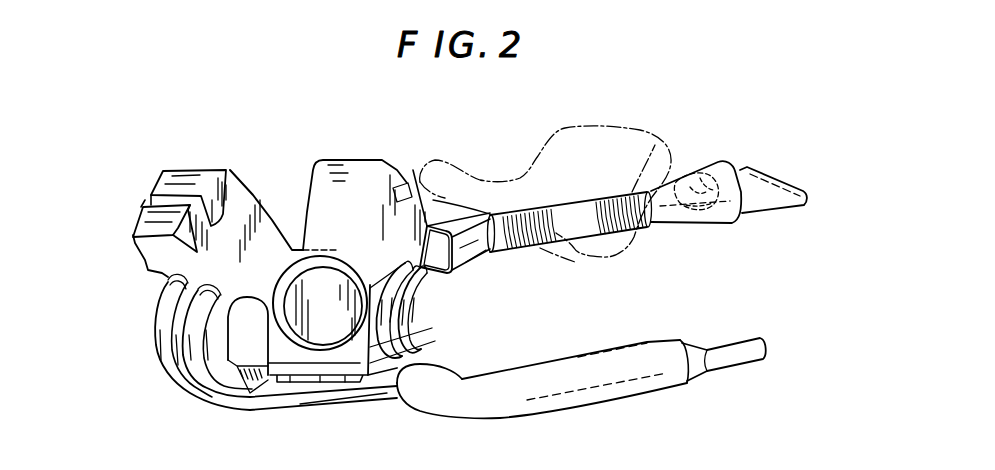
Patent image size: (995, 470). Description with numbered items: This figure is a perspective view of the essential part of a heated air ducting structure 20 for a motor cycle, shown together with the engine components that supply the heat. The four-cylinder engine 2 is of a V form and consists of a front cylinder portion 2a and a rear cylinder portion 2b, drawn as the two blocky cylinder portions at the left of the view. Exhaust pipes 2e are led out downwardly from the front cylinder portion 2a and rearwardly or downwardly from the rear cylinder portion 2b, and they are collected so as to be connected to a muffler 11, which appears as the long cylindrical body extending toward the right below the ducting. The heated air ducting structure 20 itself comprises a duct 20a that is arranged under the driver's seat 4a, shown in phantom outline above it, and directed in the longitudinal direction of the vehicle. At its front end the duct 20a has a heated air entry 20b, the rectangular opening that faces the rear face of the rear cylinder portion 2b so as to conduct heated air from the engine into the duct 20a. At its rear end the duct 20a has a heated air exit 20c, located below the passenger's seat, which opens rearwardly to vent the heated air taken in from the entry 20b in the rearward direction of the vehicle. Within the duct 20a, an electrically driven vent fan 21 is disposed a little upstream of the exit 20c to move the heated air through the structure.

The four-cylinder engine 2 is at (285, 356).
The front cylinder portion 2a is at (240, 183).
The rear cylinder portion 2b is at (366, 186).
The exhaust pipes 2e is at (203, 385).
The front part of seat (driver's seat) 4a is at (549, 138).
The muffler 11 is at (583, 392).
The heated air ducting structure 20 is at (579, 248).
The duct 20a is at (578, 227).
The heated air entry 20b is at (431, 277).
The heated air exit 20c is at (809, 200).
The electrically driven vent fan 21 is at (693, 178).